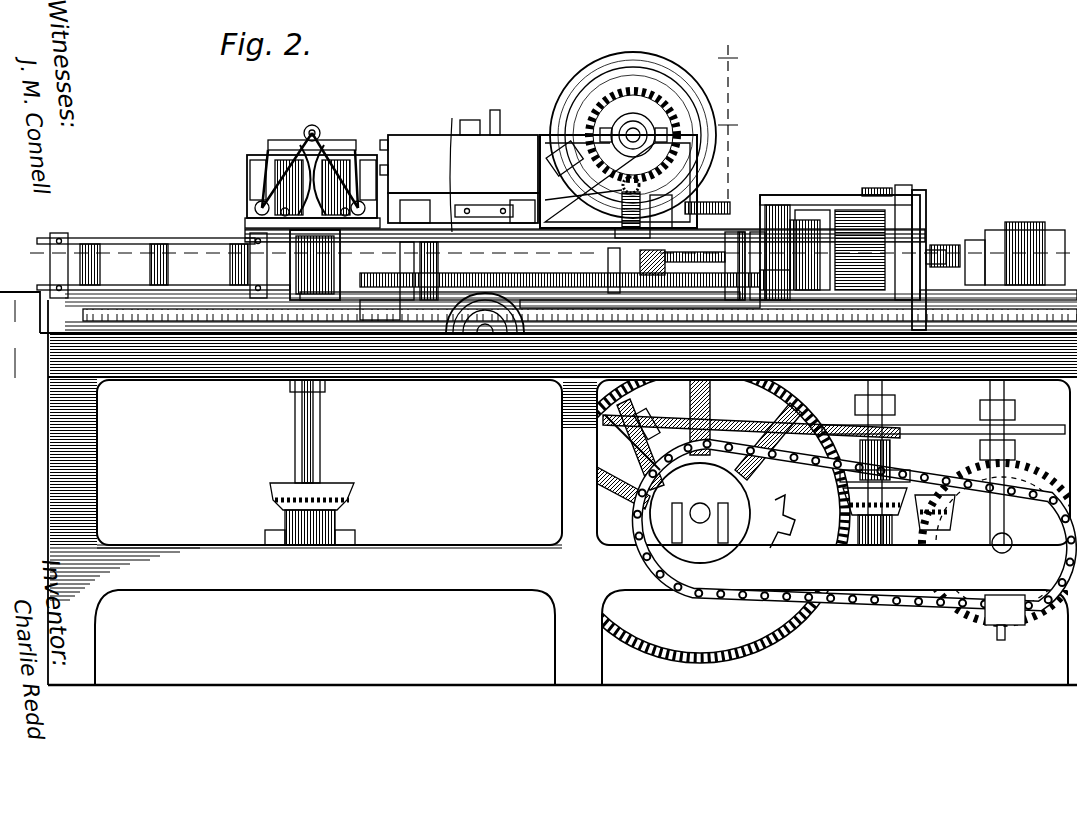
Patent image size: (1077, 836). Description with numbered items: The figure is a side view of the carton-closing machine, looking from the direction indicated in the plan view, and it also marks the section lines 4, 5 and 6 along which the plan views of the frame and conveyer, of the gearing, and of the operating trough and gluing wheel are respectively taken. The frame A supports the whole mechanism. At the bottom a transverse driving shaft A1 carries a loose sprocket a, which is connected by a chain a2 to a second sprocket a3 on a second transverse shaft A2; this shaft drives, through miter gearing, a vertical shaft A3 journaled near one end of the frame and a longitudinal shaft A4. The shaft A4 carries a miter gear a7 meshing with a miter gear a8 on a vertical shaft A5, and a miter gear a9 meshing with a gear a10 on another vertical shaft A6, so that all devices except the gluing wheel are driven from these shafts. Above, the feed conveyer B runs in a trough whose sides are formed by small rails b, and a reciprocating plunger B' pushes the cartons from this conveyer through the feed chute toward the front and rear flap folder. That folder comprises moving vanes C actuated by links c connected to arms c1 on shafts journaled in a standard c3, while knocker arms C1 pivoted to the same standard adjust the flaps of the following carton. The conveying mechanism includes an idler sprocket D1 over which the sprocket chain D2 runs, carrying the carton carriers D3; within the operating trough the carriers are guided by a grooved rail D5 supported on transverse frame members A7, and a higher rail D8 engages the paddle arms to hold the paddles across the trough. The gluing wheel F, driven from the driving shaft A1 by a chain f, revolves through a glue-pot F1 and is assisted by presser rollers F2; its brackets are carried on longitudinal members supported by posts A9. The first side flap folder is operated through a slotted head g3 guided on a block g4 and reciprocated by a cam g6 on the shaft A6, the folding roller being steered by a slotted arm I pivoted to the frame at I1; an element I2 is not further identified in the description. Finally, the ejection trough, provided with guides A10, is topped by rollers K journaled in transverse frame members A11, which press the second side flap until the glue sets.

The frame A is at (100, 483).
The driving-shaft A1 is at (704, 522).
The second shaft A2 is at (1003, 548).
The vertical shaft A3 is at (454, 159).
The longitudinal shaft A4 is at (445, 545).
The vertical shaft A5 is at (296, 428).
The vertical shaft A6 is at (905, 398).
The transverse frame members A7 is at (420, 300).
The posts A9 is at (395, 300).
The guides A10 is at (880, 300).
The transverse frame members A11 is at (820, 215).
The sprocket a is at (700, 513).
The chain a2 is at (868, 605).
The second sprocket a3 is at (999, 543).
The miter gear a7 is at (355, 496).
The miter gear a8 is at (278, 497).
The miter gear a9 is at (845, 500).
The gear a10 is at (910, 500).
The feed conveyer B is at (544, 334).
The reciprocating plunger B' is at (315, 265).
The rails b is at (200, 292).
The moving vanes C is at (255, 210).
The knocker arms C1 is at (310, 126).
The links c is at (250, 165).
The arms c1 is at (268, 148).
The standard c3 is at (318, 142).
The idler sprocket D1 is at (152, 322).
The sprocket chain D2 is at (548, 300).
The carton carriers D3 is at (98, 236).
The rail D5 is at (505, 300).
The rail D8 is at (545, 286).
The gluing wheel F is at (722, 125).
The glue-pot F1 is at (459, 166).
The presser rollers F2 is at (698, 200).
The chain f is at (642, 420).
The slotted head g3 is at (1060, 434).
The block g4 is at (858, 418).
The cam g6 is at (990, 432).
The slotted arm I is at (828, 205).
The pivot I1 is at (903, 188).
The plate I2 is at (927, 216).
The rollers K is at (858, 208).
The section line 4— 4 is at (946, 257).
The section line 5— 5 is at (100, 447).
The section line 6— 6 is at (751, 233).